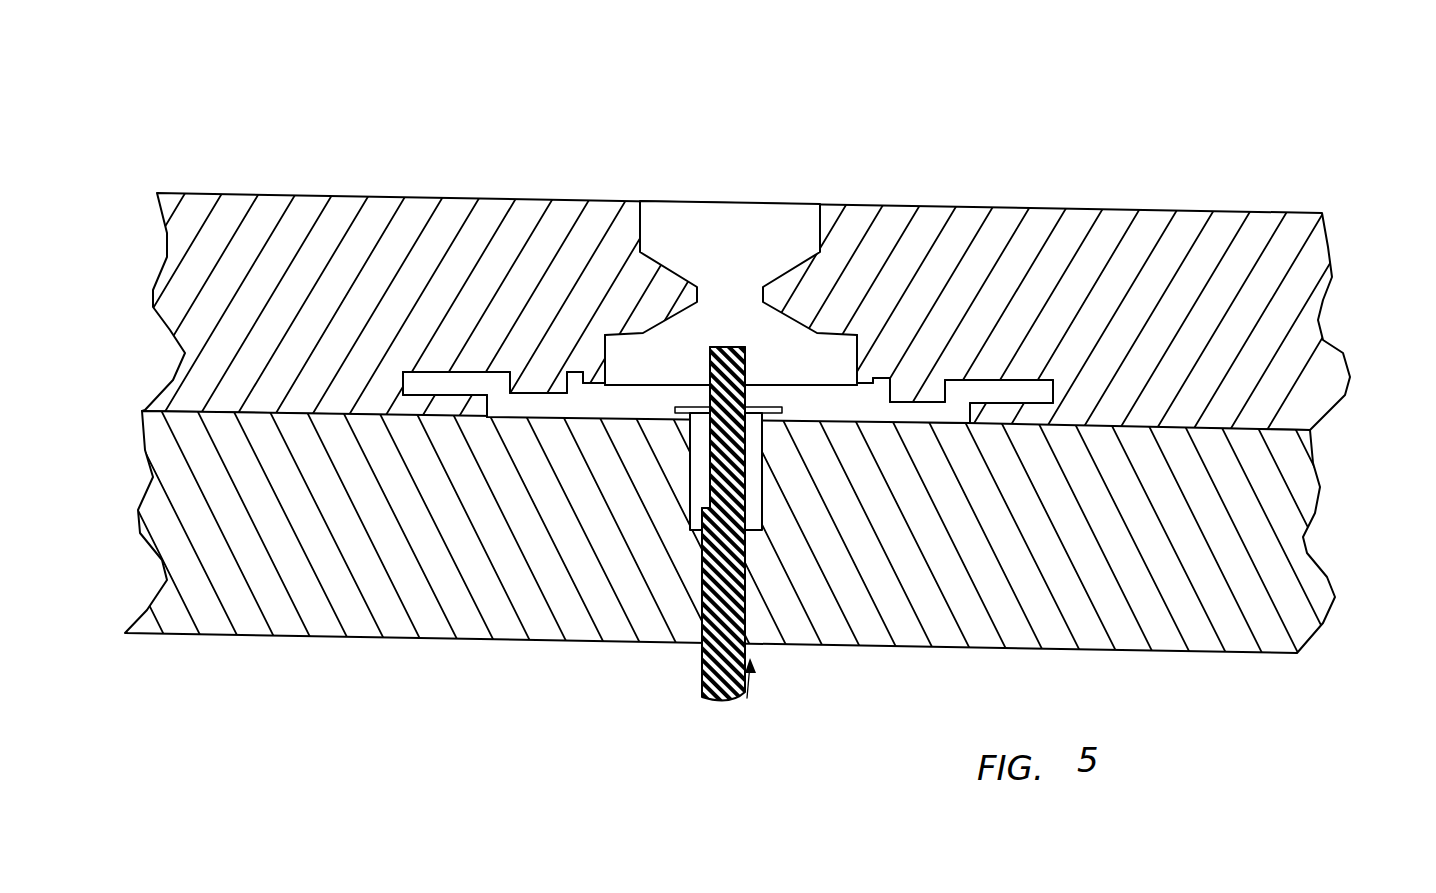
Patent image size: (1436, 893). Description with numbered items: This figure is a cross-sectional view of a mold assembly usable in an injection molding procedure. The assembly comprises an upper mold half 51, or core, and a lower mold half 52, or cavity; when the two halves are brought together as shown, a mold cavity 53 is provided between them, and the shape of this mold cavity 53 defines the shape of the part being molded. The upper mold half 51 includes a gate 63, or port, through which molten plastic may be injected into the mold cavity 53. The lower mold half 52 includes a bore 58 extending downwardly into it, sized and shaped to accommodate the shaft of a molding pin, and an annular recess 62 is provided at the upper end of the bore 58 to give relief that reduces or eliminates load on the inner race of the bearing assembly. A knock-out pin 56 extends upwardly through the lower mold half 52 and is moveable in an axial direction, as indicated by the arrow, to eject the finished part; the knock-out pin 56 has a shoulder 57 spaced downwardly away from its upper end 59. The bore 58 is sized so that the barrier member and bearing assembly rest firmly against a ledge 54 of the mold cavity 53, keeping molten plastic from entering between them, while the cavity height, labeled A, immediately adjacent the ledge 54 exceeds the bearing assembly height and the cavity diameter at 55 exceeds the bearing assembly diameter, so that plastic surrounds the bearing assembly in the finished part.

The upper mold half 51 is at (1188, 225).
The lower mold half 52 is at (1287, 607).
The mold cavity 53 is at (614, 414).
The ledge 54 is at (806, 407).
The diameter location of mold cavity 55 is at (857, 364).
The knock-out pin 56 is at (700, 667).
The shoulder 57 is at (748, 503).
The bore 58 is at (692, 499).
The upper end 59 is at (733, 347).
The annular recess 62 is at (680, 410).
The gate 63 is at (718, 225).